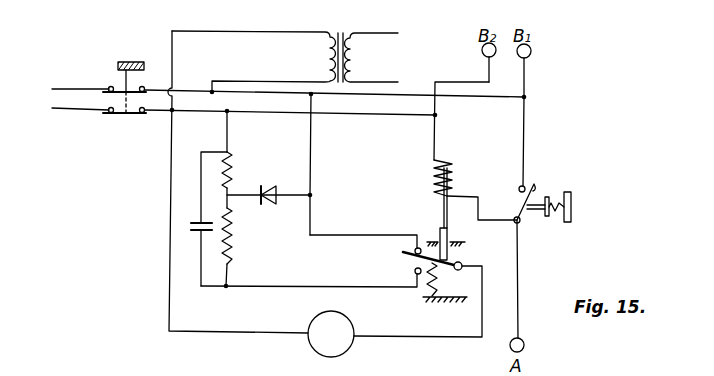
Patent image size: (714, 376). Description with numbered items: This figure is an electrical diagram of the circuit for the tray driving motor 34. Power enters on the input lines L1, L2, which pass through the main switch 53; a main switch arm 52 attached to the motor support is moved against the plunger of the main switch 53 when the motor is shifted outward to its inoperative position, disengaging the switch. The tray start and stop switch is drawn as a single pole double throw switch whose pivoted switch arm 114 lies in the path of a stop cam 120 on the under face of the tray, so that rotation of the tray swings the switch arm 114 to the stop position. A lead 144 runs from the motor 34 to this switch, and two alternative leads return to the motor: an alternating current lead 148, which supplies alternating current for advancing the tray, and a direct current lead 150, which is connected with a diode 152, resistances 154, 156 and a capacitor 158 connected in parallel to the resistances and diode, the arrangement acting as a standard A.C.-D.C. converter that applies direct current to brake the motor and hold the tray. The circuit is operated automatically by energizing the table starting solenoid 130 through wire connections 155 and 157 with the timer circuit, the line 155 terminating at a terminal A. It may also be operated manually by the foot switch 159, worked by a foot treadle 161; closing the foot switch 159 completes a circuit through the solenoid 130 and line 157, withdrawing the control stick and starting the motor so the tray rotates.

The main switch arm 52 is at (129, 61).
The main switch 53 is at (128, 116).
The resistance 156 is at (232, 158).
The resistance 154 is at (234, 243).
The capacitor 158 is at (193, 238).
The diode 152 is at (270, 188).
The direct current lead 150 is at (300, 288).
The alternating current lead 148 is at (391, 236).
The switch arm 114 is at (405, 254).
The stop cam 120 is at (450, 249).
The table starting solenoid 130 is at (448, 176).
The wire connection 157 is at (432, 139).
The wire connection 155 is at (466, 197).
The foot switch 159 is at (533, 181).
The foot treadle 161 is at (569, 191).
The lead 144 is at (447, 338).
The motor 34 is at (307, 344).
The power input line L1 is at (59, 87).
The power input line L2 is at (60, 107).